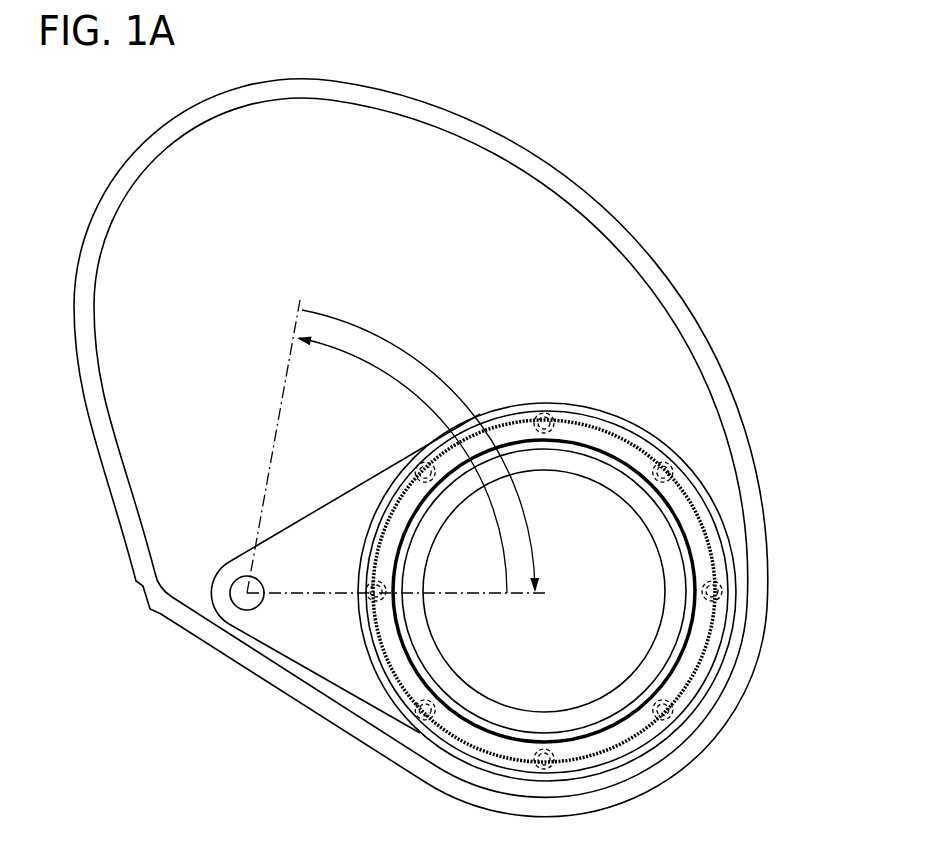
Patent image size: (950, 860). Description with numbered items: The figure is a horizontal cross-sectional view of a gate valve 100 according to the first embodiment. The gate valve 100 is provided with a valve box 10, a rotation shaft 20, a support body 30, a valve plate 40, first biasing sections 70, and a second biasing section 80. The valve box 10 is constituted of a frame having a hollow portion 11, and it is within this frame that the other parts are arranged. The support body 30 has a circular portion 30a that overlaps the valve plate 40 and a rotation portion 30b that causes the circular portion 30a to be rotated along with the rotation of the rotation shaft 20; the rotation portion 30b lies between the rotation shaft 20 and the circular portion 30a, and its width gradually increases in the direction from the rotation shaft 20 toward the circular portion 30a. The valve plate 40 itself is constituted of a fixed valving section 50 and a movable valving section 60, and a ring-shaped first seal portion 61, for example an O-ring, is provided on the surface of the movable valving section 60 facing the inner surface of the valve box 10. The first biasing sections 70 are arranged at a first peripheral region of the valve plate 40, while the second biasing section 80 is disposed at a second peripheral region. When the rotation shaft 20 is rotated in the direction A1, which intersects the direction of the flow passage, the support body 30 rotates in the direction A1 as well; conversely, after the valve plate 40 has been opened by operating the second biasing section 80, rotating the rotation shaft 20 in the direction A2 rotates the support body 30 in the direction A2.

The gate valve 100 is at (665, 205).
The valve box 10 is at (457, 133).
The hollow portion 11 is at (363, 143).
The rotation shaft 20 is at (242, 605).
The support body 30 is at (282, 731).
The circular portion 30a is at (393, 730).
The rotation portion 30b is at (353, 680).
The valve plate 40 is at (812, 632).
The fixed valving section 50 is at (632, 628).
The movable valving section 60 is at (687, 668).
The first seal portion 61 is at (596, 760).
The first biasing sections 70 is at (447, 730).
The second biasing section 80 is at (500, 713).
The rotation direction A1 is at (420, 451).
The rotation direction A2 is at (402, 464).